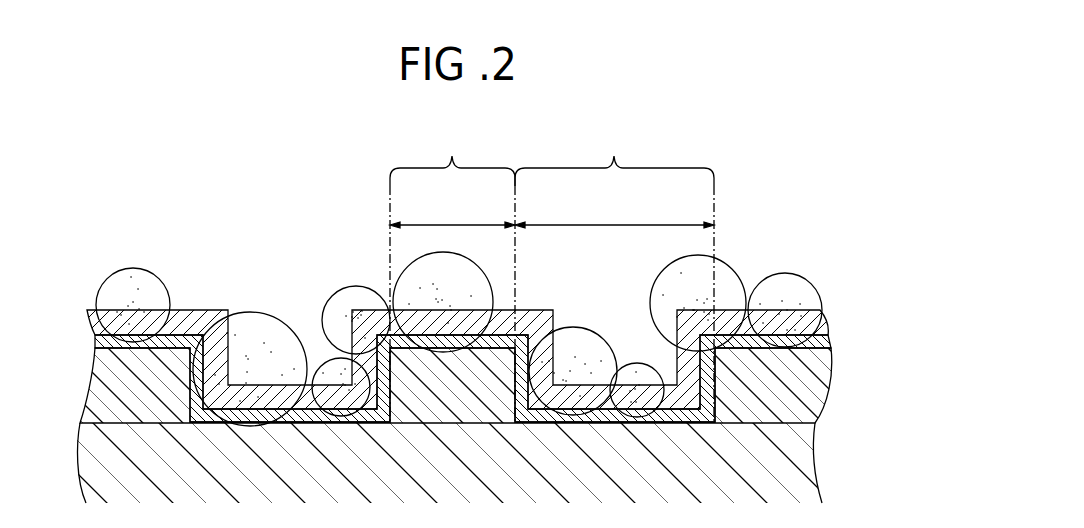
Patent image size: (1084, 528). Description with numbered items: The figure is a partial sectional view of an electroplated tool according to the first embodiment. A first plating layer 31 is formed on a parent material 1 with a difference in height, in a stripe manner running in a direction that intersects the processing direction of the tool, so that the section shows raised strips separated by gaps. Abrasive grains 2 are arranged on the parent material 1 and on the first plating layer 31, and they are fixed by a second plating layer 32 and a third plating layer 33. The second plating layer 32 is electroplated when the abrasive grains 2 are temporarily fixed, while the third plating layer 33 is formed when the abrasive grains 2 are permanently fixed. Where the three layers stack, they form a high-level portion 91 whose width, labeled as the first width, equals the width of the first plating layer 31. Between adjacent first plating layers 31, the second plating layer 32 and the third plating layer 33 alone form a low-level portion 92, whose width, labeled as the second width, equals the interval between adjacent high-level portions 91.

The parent material 1 is at (814, 466).
The abrasive grains 2 is at (731, 268).
The first plating layer 31 is at (828, 380).
The second plating layer 32 is at (833, 342).
The third plating layer 33 is at (827, 322).
The high-level portion 91 is at (452, 273).
The low-level portion 92 is at (614, 273).